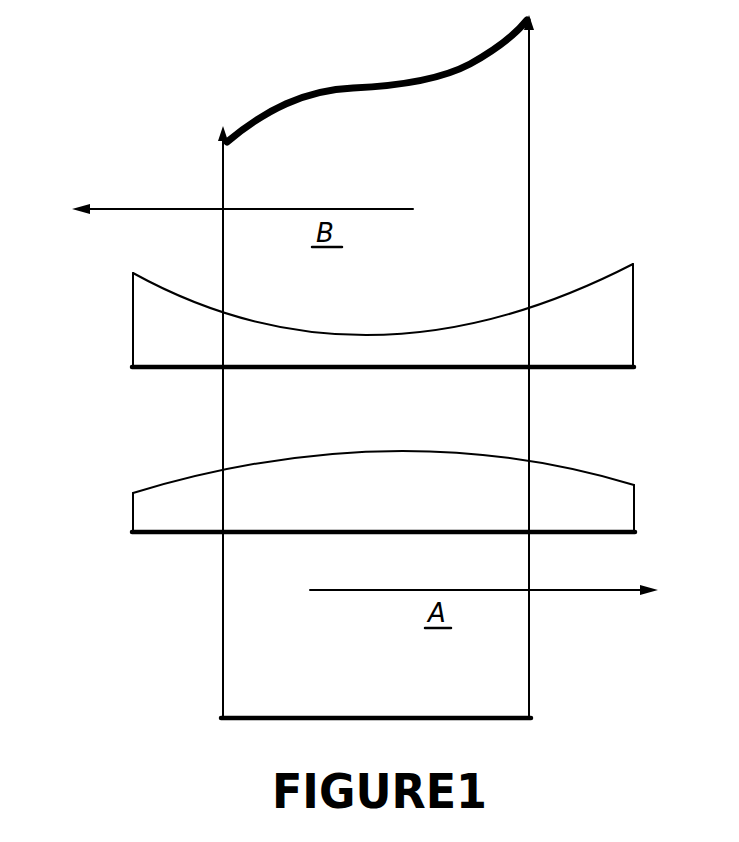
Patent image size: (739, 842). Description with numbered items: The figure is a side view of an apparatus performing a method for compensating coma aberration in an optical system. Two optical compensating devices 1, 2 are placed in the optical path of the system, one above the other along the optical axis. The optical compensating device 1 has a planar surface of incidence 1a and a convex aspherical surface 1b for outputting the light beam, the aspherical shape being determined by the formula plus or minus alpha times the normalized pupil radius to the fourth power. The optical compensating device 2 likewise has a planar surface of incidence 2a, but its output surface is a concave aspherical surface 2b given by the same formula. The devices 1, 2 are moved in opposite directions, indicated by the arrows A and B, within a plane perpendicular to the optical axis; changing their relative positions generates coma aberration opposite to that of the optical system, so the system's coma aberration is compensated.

The optical compensating device 1 is at (346, 538).
The surface of incidence 1a is at (185, 533).
The convex aspherical surface 1b is at (158, 483).
The optical compensating device 2 is at (340, 351).
The surface of incidence 2a is at (178, 368).
The concave aspherical surface 2b is at (155, 283).